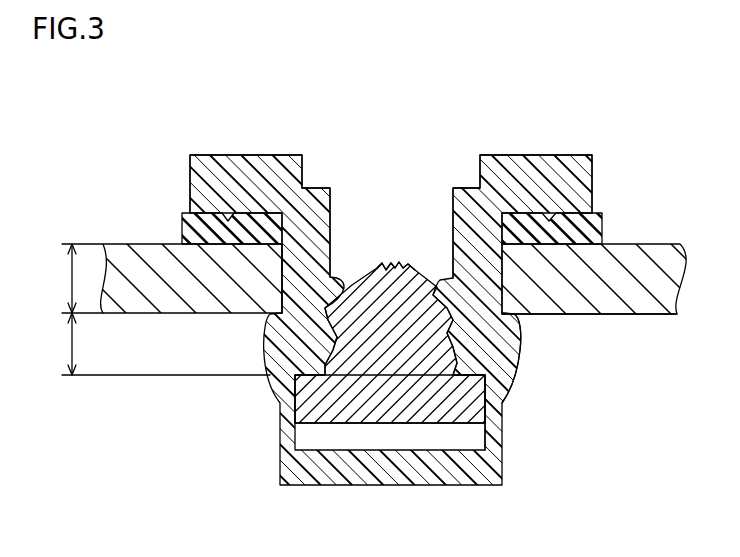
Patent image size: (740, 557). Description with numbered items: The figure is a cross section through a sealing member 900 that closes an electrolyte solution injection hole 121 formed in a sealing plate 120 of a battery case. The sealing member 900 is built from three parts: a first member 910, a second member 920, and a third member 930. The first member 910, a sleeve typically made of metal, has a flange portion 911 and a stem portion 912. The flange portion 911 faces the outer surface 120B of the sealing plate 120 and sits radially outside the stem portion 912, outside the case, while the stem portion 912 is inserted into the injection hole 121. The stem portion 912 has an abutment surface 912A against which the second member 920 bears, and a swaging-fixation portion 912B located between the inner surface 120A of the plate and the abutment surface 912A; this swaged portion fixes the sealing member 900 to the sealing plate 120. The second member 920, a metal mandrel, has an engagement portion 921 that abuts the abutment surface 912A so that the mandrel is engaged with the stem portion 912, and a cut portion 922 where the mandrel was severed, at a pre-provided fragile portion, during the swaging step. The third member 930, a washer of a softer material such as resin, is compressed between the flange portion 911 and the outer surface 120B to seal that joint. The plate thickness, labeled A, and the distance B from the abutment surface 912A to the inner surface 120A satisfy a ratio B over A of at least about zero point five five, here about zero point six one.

The sealing member 900 is at (622, 108).
The first member 910 is at (537, 165).
The flange portion 911 is at (238, 167).
The stem portion 912 is at (495, 435).
The abutment surface 912A is at (500, 385).
The swaging-fixation portion 912B is at (512, 332).
The second member 920 is at (358, 288).
The engagement portion 921 is at (393, 403).
The cut portion 922 is at (398, 267).
The third member 930 is at (600, 228).
The sealing plate 120 is at (650, 257).
The inner surface 120A is at (647, 314).
The outer surface 120B is at (132, 243).
The electrolyte solution injection hole 121 is at (300, 303).